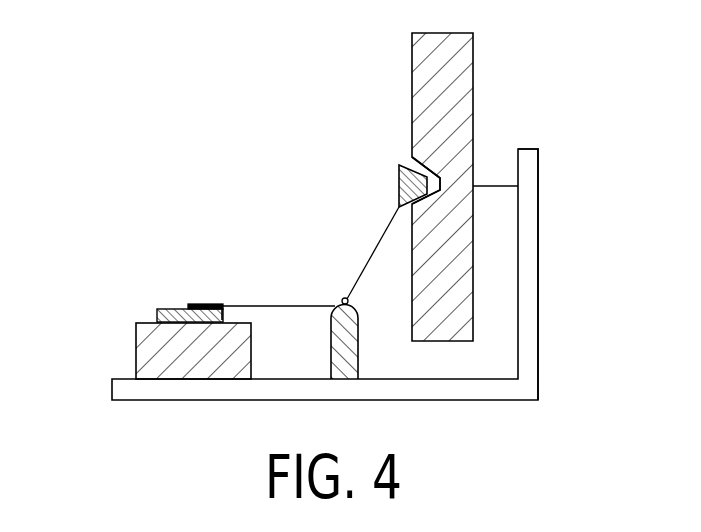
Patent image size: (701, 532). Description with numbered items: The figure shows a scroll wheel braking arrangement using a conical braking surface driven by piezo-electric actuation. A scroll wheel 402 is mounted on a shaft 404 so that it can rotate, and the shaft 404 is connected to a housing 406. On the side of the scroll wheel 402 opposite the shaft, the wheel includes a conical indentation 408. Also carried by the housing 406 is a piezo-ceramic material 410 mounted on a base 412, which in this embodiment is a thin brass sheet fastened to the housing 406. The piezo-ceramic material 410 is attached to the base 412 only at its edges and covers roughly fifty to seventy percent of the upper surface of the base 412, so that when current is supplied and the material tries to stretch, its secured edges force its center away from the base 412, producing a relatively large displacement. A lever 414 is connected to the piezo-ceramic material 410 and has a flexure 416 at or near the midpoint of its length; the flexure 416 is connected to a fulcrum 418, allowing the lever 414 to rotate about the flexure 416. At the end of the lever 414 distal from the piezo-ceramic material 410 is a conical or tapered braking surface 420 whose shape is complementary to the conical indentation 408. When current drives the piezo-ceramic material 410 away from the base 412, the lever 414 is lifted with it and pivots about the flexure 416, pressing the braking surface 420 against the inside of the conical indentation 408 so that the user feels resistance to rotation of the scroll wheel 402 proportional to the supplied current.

The scroll wheel 402 is at (473, 59).
The shaft 404 is at (503, 185).
The housing 406 is at (538, 238).
The conical indentation 408 is at (408, 160).
The piezo-ceramic material 410 is at (157, 314).
The base 412 is at (136, 351).
The lever 414 is at (243, 306).
The flexure 416 is at (336, 298).
The fulcrum 418 is at (330, 330).
The conical braking surface 420 is at (397, 177).